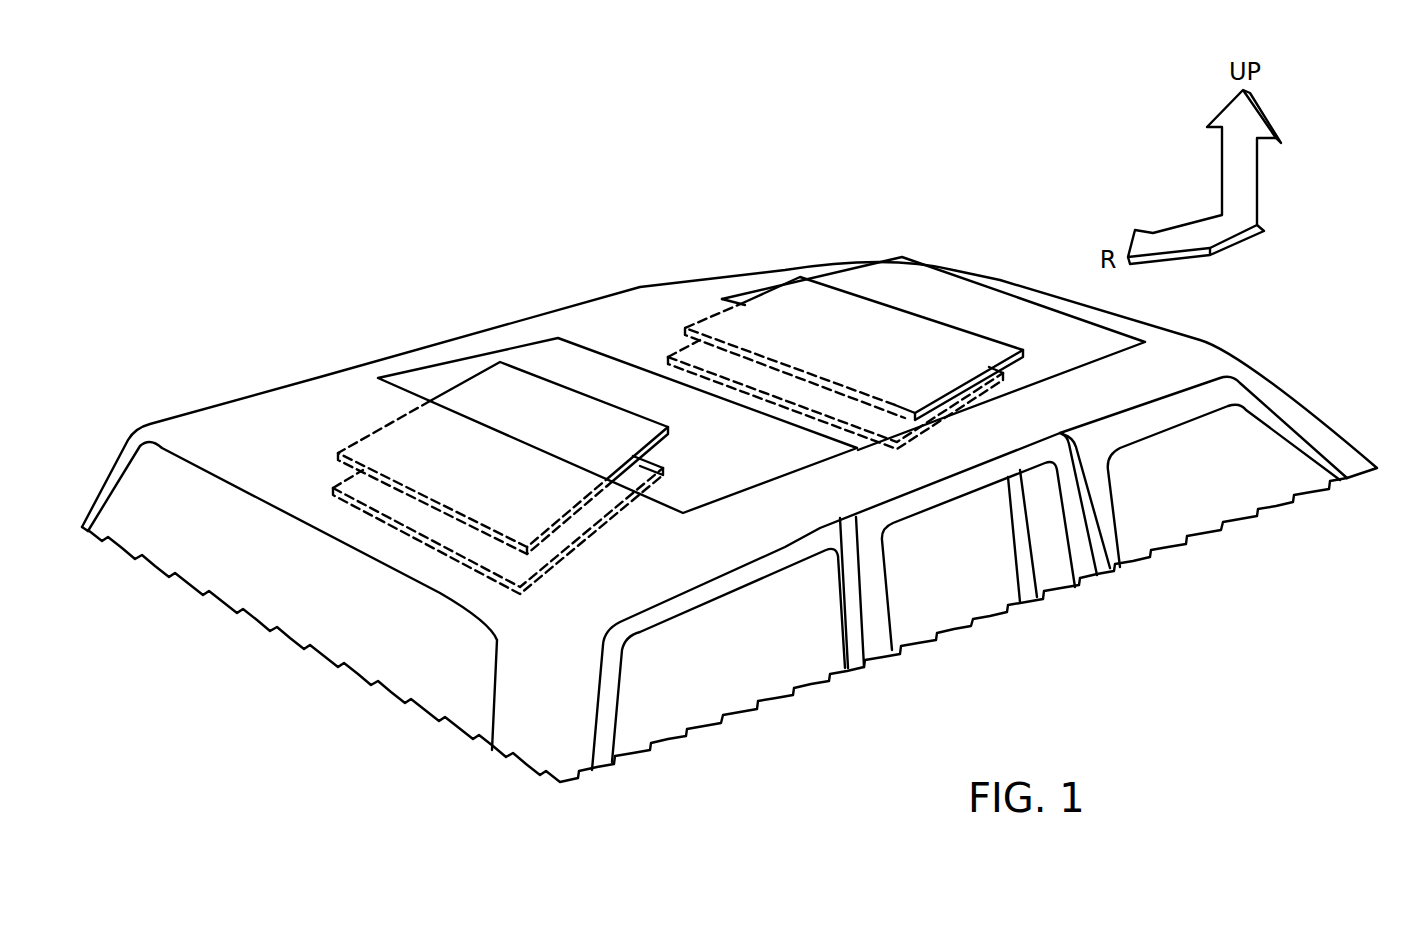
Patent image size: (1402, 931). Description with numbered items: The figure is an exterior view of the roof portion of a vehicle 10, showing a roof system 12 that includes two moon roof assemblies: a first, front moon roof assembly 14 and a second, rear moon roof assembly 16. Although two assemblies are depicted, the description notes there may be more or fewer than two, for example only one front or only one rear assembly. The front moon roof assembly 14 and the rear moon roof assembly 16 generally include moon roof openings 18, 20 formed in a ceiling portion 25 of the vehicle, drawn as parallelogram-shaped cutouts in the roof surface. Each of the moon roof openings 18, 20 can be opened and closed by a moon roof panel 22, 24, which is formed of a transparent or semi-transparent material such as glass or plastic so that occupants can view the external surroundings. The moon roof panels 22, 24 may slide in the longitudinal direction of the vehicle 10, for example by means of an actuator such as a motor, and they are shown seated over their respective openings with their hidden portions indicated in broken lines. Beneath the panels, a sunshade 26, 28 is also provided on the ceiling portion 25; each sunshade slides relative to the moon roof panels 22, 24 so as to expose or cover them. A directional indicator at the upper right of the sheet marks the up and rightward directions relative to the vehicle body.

The vehicle 10 is at (729, 419).
The roof system 12 is at (729, 458).
The front moon roof assembly 14 is at (739, 371).
The rear moon roof assembly 16 is at (374, 322).
The moon roof opening 18 is at (992, 290).
The moon roof opening 20 is at (533, 343).
The moon roof panel 22 is at (787, 293).
The moon roof panel 24 is at (485, 387).
The ceiling portion 25 is at (634, 310).
The sunshade 26 is at (1007, 375).
The sunshade 28 is at (647, 460).